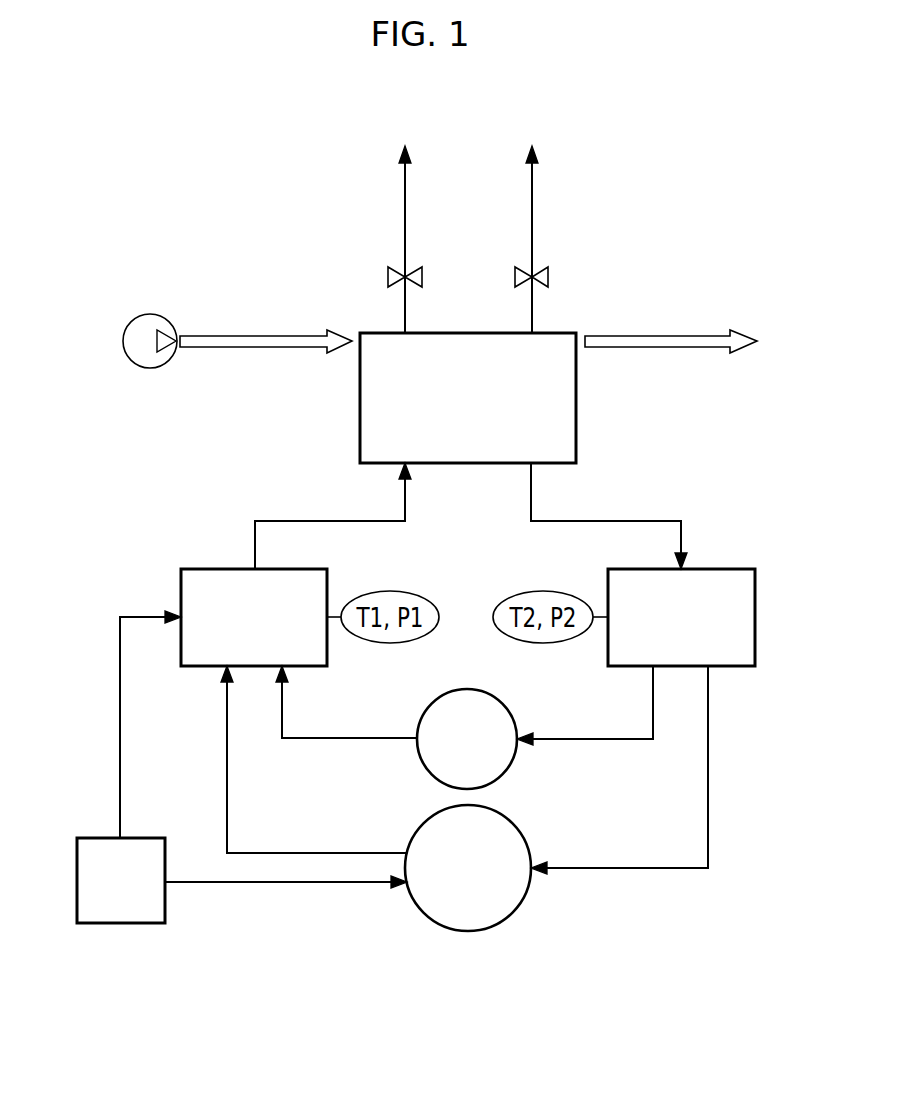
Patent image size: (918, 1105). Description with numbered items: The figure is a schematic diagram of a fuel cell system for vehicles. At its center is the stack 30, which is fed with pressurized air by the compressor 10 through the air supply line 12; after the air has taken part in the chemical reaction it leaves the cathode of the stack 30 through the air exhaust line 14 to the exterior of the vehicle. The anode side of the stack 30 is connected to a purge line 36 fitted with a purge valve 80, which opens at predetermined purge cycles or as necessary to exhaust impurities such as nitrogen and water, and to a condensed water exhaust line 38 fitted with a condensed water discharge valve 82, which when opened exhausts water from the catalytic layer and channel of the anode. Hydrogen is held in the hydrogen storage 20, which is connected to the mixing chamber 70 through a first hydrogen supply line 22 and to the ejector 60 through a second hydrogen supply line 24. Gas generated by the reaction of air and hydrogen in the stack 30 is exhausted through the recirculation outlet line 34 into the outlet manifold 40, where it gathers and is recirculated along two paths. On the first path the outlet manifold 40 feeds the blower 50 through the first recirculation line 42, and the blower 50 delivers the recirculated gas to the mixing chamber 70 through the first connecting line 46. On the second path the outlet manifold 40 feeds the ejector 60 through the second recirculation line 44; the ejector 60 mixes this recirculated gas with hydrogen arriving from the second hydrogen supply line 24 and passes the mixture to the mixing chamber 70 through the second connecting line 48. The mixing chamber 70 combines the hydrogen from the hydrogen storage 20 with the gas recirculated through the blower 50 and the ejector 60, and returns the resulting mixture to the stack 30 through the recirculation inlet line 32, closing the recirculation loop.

The compressor 10 is at (149, 315).
The air supply line 12 is at (266, 334).
The air exhaust line 14 is at (671, 334).
The hydrogen storage 20 is at (119, 925).
The first hydrogen supply line 22 is at (120, 729).
The second hydrogen supply line 24 is at (272, 884).
The stack 30 is at (577, 407).
The recirculation inlet line 32 is at (290, 520).
The recirculation outlet line 34 is at (638, 520).
The purge line 36 is at (407, 198).
The condensed water exhaust line 38 is at (534, 198).
The outlet manifold 40 is at (721, 568).
The first recirculation line 42 is at (585, 737).
The second recirculation line 44 is at (710, 767).
The first connecting line 46 is at (349, 737).
The second connecting line 48 is at (226, 769).
The blower 50 is at (466, 688).
The ejector 60 is at (466, 932).
The mixing chamber 70 is at (216, 568).
The purge valve 80 is at (424, 275).
The condensed water discharge valve 82 is at (550, 275).